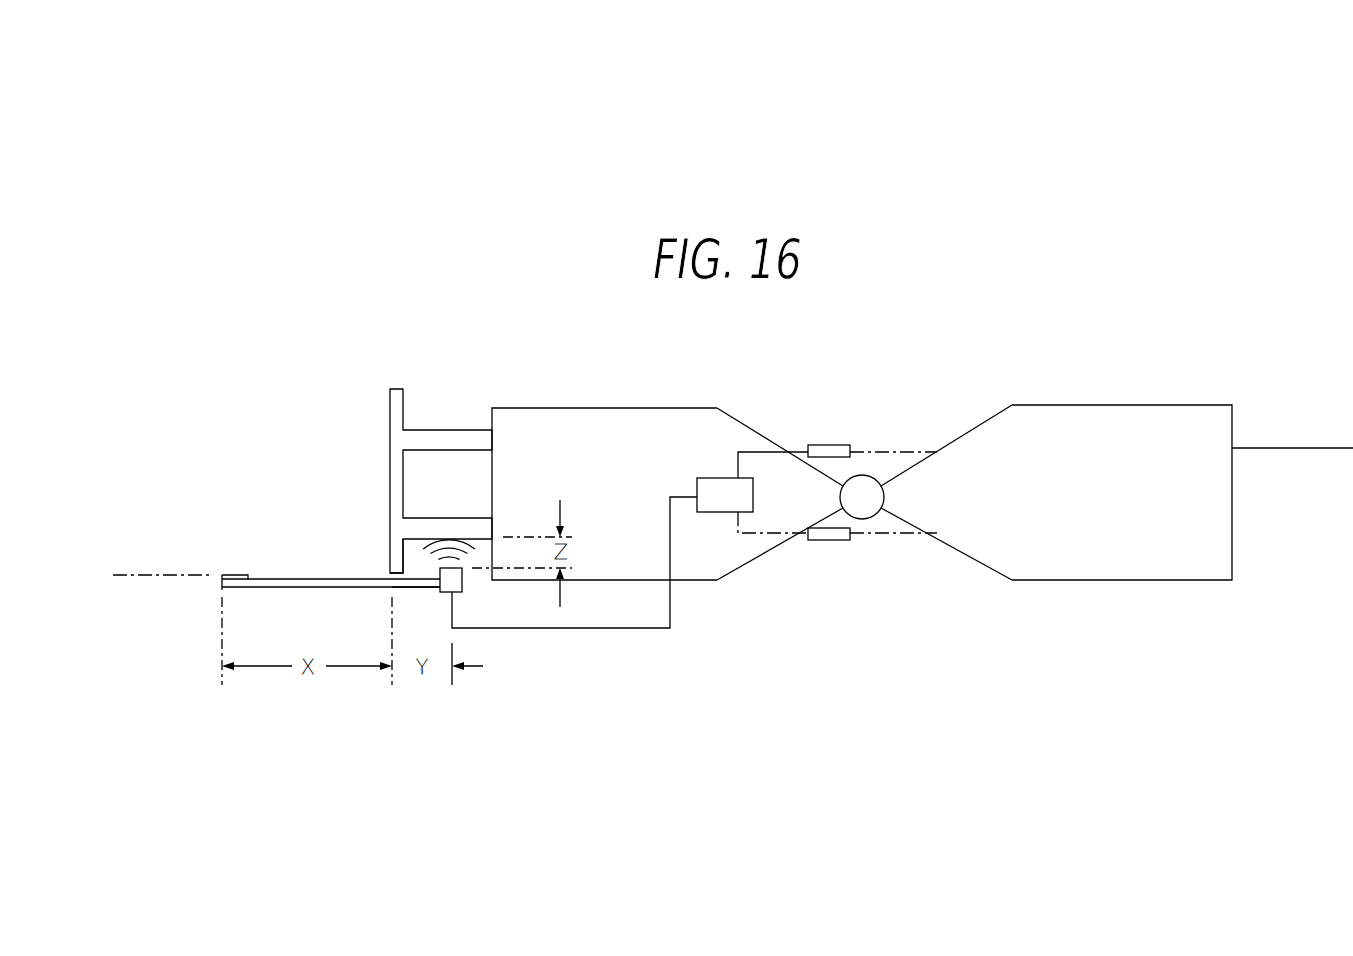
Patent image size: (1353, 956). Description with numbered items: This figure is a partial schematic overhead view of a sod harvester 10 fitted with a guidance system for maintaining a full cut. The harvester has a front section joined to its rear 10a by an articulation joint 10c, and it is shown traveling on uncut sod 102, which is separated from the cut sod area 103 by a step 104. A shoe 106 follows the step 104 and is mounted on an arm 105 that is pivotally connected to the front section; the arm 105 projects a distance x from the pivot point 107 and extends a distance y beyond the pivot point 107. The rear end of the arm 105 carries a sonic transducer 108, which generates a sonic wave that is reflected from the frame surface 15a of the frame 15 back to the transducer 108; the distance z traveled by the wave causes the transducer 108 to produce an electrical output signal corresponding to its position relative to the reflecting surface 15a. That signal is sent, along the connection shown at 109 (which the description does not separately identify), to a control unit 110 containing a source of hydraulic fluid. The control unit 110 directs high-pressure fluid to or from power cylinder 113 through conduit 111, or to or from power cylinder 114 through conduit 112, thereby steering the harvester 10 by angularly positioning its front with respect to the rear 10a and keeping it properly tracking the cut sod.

The sod harvester 10 is at (916, 375).
The rear section 10a is at (1115, 405).
The articulation joint 10c is at (870, 503).
The frame 15 is at (388, 460).
The reflecting surface 15a is at (425, 540).
The uncut sod 102 is at (163, 527).
The cut sod area 103 is at (158, 692).
The step 104 is at (188, 577).
The arm 105 is at (302, 578).
The shoe 106 is at (580, 407).
The pivot point 107 is at (398, 589).
The sonic transducer 108 is at (463, 587).
The signal line 109 is at (580, 630).
The control unit 110 is at (713, 487).
The conduit 111 is at (755, 452).
The conduit 112 is at (762, 538).
The power cylinder 113 is at (835, 443).
The power cylinder 114 is at (823, 541).